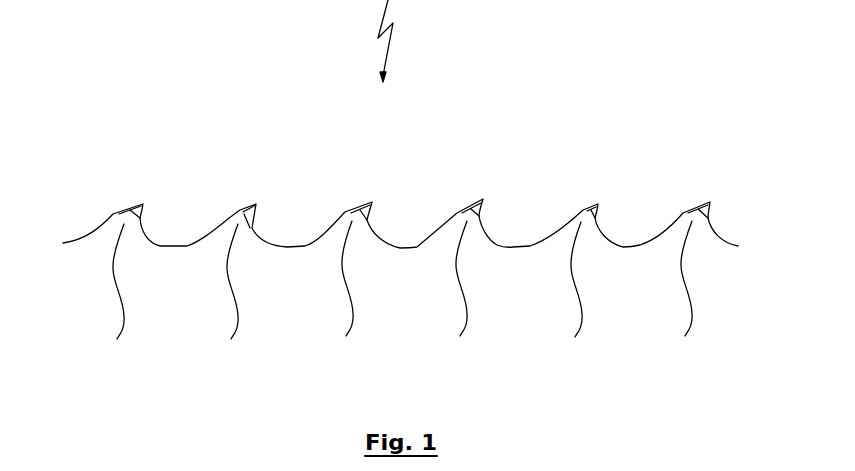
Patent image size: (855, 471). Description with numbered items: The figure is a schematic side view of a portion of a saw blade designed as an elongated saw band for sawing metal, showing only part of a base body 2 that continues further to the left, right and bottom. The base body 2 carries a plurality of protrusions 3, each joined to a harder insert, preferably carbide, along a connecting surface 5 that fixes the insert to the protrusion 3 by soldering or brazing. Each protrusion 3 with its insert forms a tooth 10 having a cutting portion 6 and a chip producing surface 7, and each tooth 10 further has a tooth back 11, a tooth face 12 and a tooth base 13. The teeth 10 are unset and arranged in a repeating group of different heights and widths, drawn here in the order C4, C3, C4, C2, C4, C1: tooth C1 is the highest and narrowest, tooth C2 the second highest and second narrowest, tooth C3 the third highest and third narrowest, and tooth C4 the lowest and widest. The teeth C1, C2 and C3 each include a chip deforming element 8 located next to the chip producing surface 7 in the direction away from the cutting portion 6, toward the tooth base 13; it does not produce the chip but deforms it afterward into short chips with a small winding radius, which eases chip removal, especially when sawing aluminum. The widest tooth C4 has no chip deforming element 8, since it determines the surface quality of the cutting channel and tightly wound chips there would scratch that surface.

The base body 2 is at (278, 272).
The protrusion 3 is at (230, 212).
The connecting surface 5 is at (116, 213).
The cutting portion 6 is at (138, 212).
The chip producing surface 7 is at (483, 201).
The chip deforming element 8 is at (487, 203).
The tooth 10 is at (133, 212).
The tooth back 11 is at (128, 213).
The tooth face 12 is at (143, 205).
The tooth base 13 is at (413, 245).
The tooth C1 is at (681, 293).
The tooth C2 is at (458, 293).
The tooth C3 is at (227, 295).
The tooth C4 is at (343, 293).